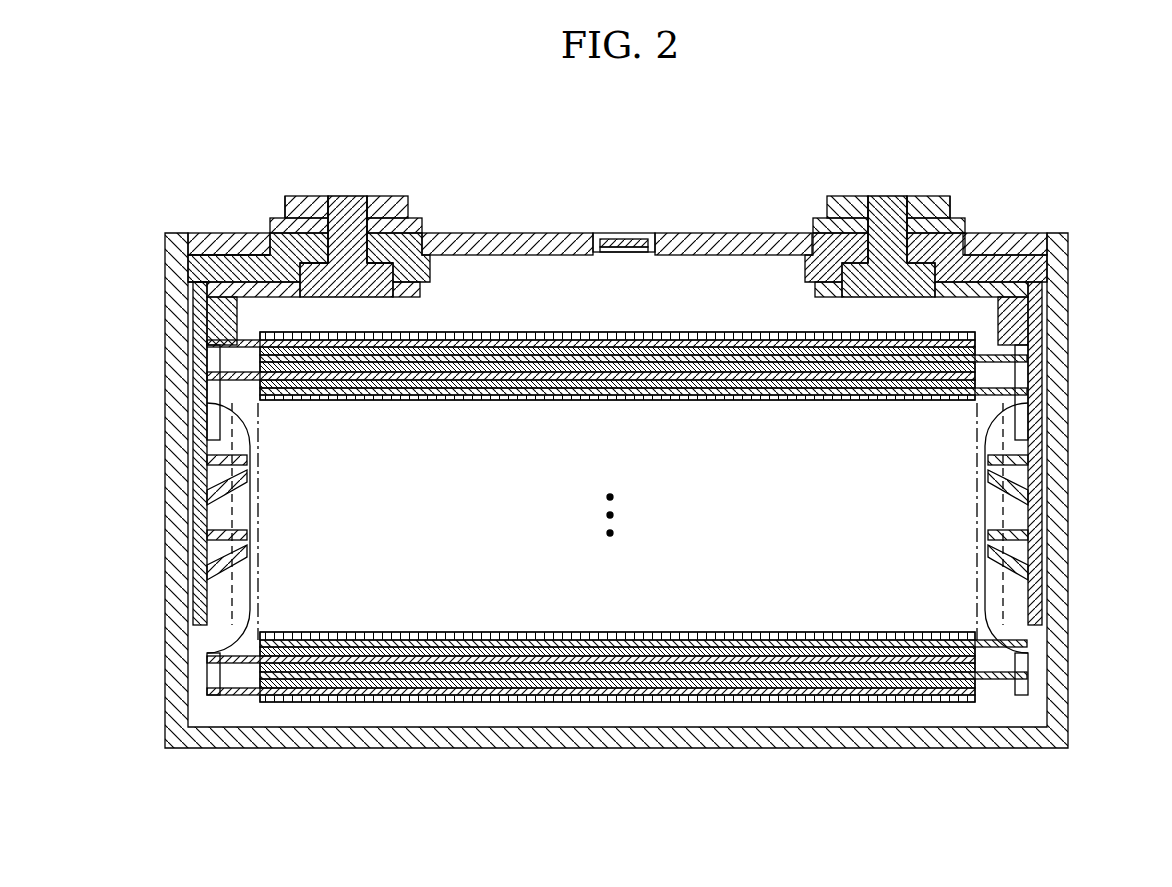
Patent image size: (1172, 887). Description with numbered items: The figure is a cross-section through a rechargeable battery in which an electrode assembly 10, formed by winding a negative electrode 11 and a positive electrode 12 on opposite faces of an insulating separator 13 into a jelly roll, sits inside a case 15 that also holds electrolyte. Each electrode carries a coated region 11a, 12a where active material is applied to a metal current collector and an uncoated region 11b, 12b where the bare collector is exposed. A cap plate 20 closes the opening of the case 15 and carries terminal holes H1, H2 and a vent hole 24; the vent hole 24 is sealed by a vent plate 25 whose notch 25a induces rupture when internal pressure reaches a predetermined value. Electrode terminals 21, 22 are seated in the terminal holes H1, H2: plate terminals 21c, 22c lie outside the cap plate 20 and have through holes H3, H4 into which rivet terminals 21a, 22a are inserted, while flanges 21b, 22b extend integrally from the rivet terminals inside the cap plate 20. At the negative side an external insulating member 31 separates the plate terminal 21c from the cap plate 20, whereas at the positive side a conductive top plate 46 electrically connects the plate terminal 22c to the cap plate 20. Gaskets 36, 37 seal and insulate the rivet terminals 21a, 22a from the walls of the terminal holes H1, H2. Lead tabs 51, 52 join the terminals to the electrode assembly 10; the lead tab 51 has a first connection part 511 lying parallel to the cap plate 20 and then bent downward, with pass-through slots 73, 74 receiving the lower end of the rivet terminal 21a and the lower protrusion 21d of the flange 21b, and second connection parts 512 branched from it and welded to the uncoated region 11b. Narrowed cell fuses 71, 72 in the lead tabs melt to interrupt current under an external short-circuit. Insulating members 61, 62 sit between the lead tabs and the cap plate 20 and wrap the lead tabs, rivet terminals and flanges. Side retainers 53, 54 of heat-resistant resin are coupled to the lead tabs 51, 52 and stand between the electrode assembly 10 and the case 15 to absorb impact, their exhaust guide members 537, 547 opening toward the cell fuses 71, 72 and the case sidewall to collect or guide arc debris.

The electrode assembly 10 is at (617, 589).
The negative electrode 11 is at (591, 593).
The coated region 11a is at (355, 748).
The uncoated region 11b is at (373, 806).
The positive electrode 12 is at (644, 601).
The coated region 12a is at (870, 748).
The uncoated region 12b is at (855, 806).
The separator 13 is at (600, 697).
The case 15 is at (1062, 553).
The cap plate 20 is at (537, 232).
The electrode terminal 21 is at (359, 308).
The rivet terminal 21a is at (352, 300).
The flange 21b is at (420, 285).
The plate terminal 21c is at (292, 205).
The lower protrusion 21d is at (322, 298).
The electrode terminal 22 is at (877, 283).
The rivet terminal 22a is at (884, 300).
The flange 22b is at (808, 289).
The plate terminal 22c is at (932, 196).
The vent hole 24 is at (624, 253).
The vent plate 25 is at (638, 244).
The notch 25a is at (620, 239).
The external insulating member 31 is at (405, 208).
The gasket 36 is at (272, 230).
The gasket 37 is at (958, 230).
The conductive top plate 46 is at (815, 228).
The lead tab 51 is at (156, 289).
The first connection part 511 is at (210, 318).
The second connection part 512 is at (200, 265).
The lead tab 52 is at (1028, 320).
The side retainer 53 is at (190, 405).
The exhaust guide member 537 is at (250, 483).
The side retainer 54 is at (1042, 405).
The exhaust guide member 547 is at (985, 460).
The insulating member 61 is at (200, 260).
The insulating member 62 is at (1040, 285).
The cell fuse 71 is at (200, 322).
The cell fuse 72 is at (1028, 245).
The pass-through slot 73 is at (385, 297).
The pass-through slot 74 is at (228, 270).
The terminal hole H1 is at (350, 196).
The terminal hole H2 is at (848, 196).
The through hole H3 is at (333, 196).
The through hole H4 is at (893, 196).